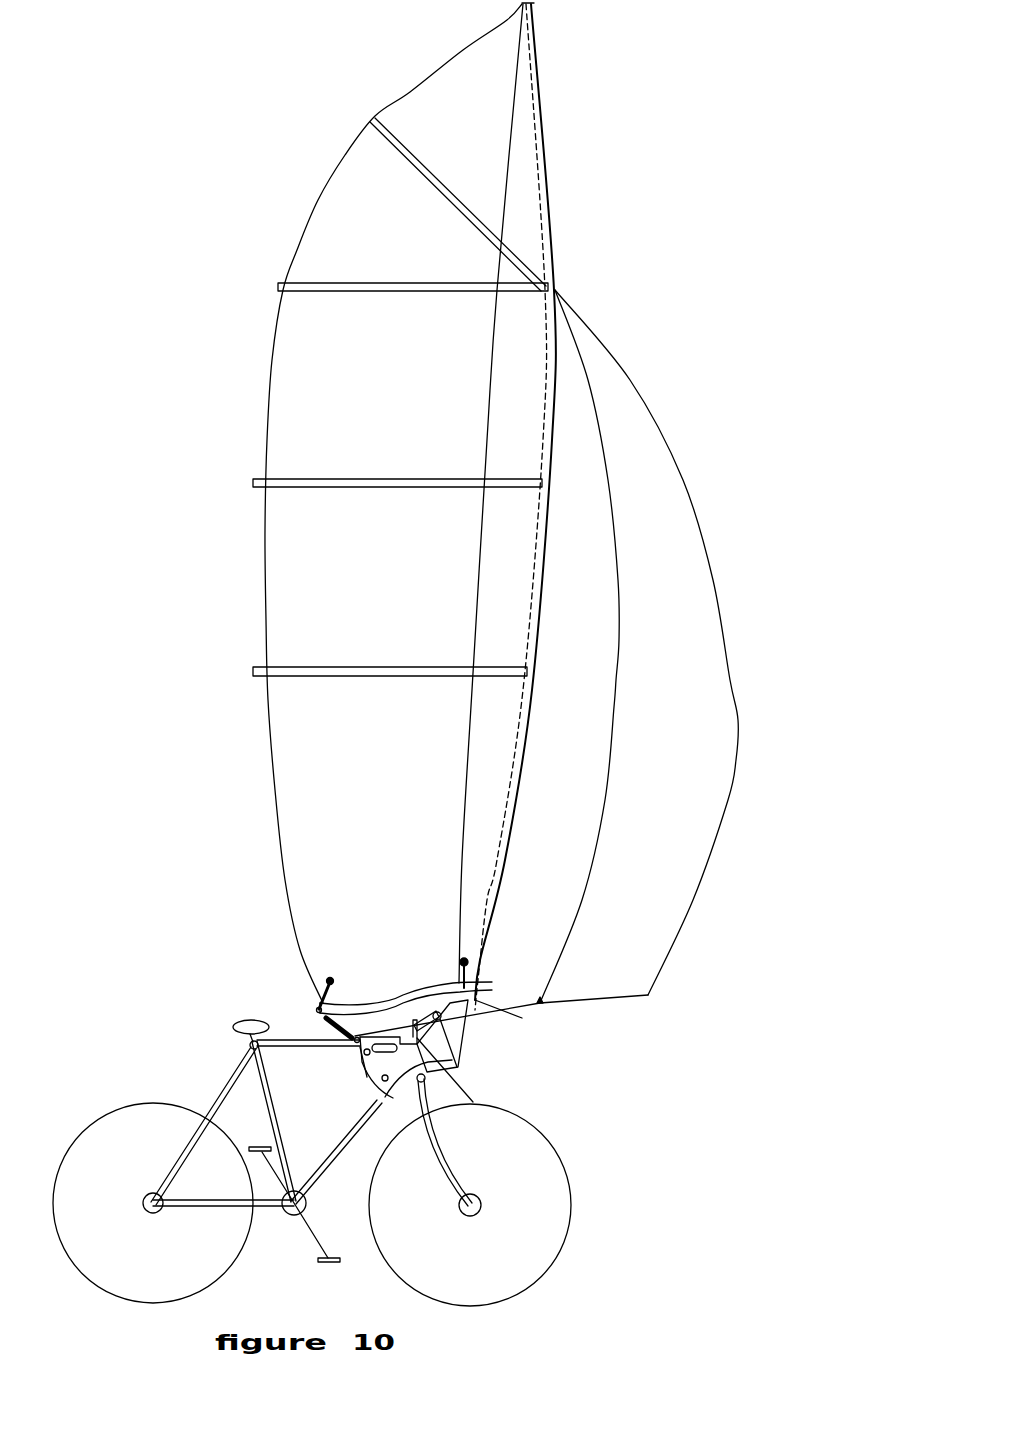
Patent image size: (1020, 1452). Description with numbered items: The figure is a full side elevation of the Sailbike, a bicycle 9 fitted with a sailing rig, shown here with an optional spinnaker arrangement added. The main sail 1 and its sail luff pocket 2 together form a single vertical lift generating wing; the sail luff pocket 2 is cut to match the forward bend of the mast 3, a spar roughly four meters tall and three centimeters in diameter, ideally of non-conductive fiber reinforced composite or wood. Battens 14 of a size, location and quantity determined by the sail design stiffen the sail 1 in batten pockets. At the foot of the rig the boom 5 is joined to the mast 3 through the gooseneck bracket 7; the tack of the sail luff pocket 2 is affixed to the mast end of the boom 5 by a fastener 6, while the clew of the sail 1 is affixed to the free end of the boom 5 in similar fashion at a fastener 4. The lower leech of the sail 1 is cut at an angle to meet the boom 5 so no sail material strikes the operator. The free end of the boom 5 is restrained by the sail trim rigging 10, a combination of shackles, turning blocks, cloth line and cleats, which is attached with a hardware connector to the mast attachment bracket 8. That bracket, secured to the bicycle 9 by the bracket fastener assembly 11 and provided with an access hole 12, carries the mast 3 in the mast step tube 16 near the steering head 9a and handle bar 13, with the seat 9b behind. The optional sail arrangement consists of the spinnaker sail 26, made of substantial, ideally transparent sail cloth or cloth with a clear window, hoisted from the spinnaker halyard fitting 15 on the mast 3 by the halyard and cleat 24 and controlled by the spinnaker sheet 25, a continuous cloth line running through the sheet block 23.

The sail 1 is at (447, 778).
The sail luff pocket 2 is at (497, 788).
The mast 3 is at (512, 815).
The fastener 4 is at (320, 990).
The boom 5 is at (392, 1005).
The fastener 6 is at (463, 980).
The gooseneck bracket 7 is at (522, 1018).
The mast attachment bracket 8 is at (468, 1030).
The bicycle 9 is at (388, 1097).
The steering head 9a is at (473, 1102).
The seat 9b is at (232, 1023).
The sail trim rigging 10 is at (317, 1013).
The bracket fastener assembly 11 is at (360, 1048).
The access hole 12 is at (362, 1067).
The handle bar 13 is at (468, 1032).
The batten 14 is at (375, 116).
The spinnaker halyard fitting 15 is at (557, 290).
The mast step tube 16 is at (470, 988).
The sheet block 23 is at (468, 1035).
The halyard and cleat 24 is at (473, 1025).
The spinnaker sheet 25 is at (380, 1015).
The spinnaker sail 26 is at (631, 901).